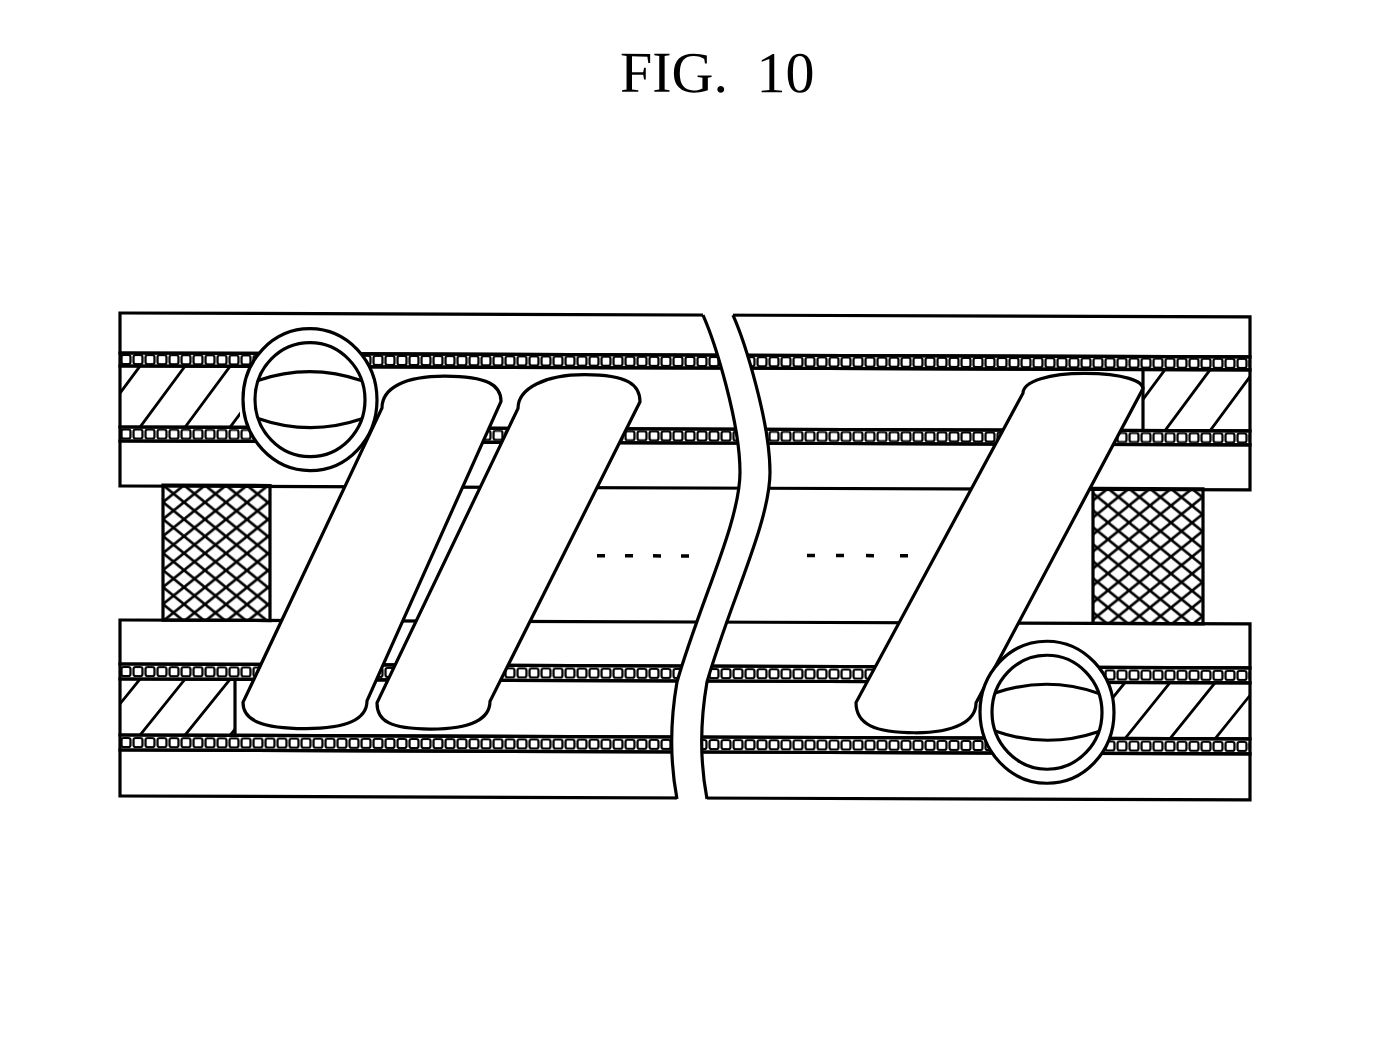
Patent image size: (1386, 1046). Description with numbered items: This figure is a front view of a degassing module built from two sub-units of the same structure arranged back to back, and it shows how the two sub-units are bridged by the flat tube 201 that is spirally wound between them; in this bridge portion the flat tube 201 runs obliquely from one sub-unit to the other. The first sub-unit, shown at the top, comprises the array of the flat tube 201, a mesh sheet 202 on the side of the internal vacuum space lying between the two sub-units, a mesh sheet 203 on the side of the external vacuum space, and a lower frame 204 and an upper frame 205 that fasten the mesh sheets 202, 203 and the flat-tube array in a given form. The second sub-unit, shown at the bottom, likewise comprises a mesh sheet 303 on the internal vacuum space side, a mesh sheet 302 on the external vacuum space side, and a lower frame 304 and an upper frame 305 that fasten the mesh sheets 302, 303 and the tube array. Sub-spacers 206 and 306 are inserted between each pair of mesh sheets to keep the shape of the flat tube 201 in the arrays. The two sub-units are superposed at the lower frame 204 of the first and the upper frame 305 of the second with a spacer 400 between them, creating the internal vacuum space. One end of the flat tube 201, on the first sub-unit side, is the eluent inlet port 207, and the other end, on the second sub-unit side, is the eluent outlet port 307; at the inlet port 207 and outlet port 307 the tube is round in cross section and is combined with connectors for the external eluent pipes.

The flat tube 201 is at (568, 395).
The mesh sheet 202 is at (683, 432).
The mesh sheet 203 is at (1023, 362).
The lower frame 204 is at (833, 462).
The upper frame 205 is at (950, 330).
The sub-spacer 206 is at (1235, 403).
The eluent inlet port 207 is at (296, 333).
The mesh sheet 302 is at (495, 750).
The mesh sheet 303 is at (590, 680).
The lower frame 304 is at (360, 780).
The upper frame 305 is at (650, 640).
The sub-spacer 306 is at (1235, 710).
The eluent outlet port 307 is at (1062, 780).
The spacer 400 is at (1205, 568).